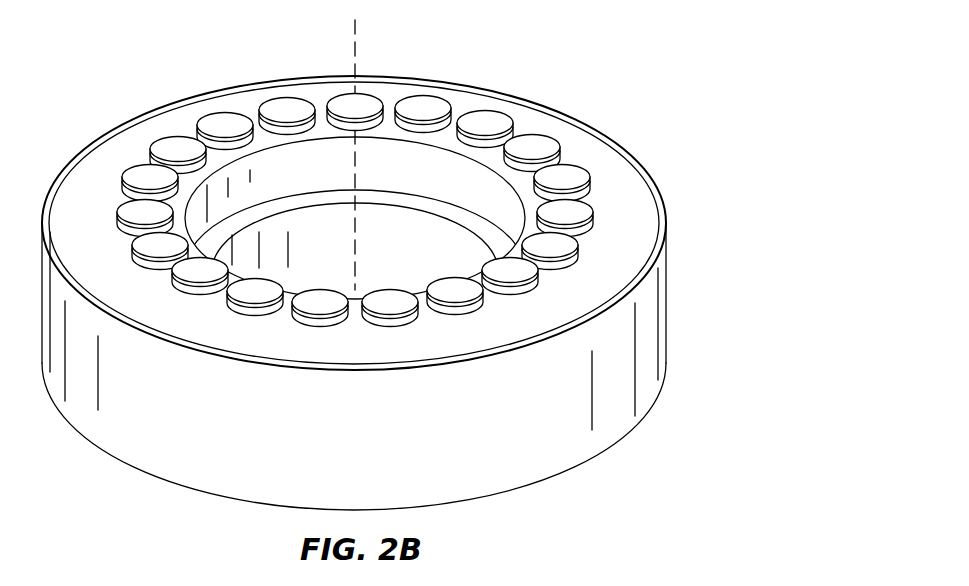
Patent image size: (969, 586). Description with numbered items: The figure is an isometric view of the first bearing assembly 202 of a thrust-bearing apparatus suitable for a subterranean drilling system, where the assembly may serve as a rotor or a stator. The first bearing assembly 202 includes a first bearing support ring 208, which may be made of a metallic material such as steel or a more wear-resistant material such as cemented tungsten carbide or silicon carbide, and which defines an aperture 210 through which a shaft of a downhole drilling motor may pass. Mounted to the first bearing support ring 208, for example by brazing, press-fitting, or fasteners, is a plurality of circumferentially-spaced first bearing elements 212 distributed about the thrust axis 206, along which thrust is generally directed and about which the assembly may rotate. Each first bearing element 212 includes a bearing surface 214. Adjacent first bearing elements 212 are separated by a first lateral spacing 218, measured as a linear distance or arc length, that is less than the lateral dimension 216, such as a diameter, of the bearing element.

The first bearing assembly 202 is at (702, 158).
The thrust axis 206 is at (366, 56).
The first bearing support ring 208 is at (615, 403).
The aperture 210 is at (250, 247).
The first bearing elements 212 is at (388, 104).
The bearing surface 214 is at (562, 177).
The lateral dimension 216 is at (306, 106).
The first lateral spacing 218 is at (258, 72).